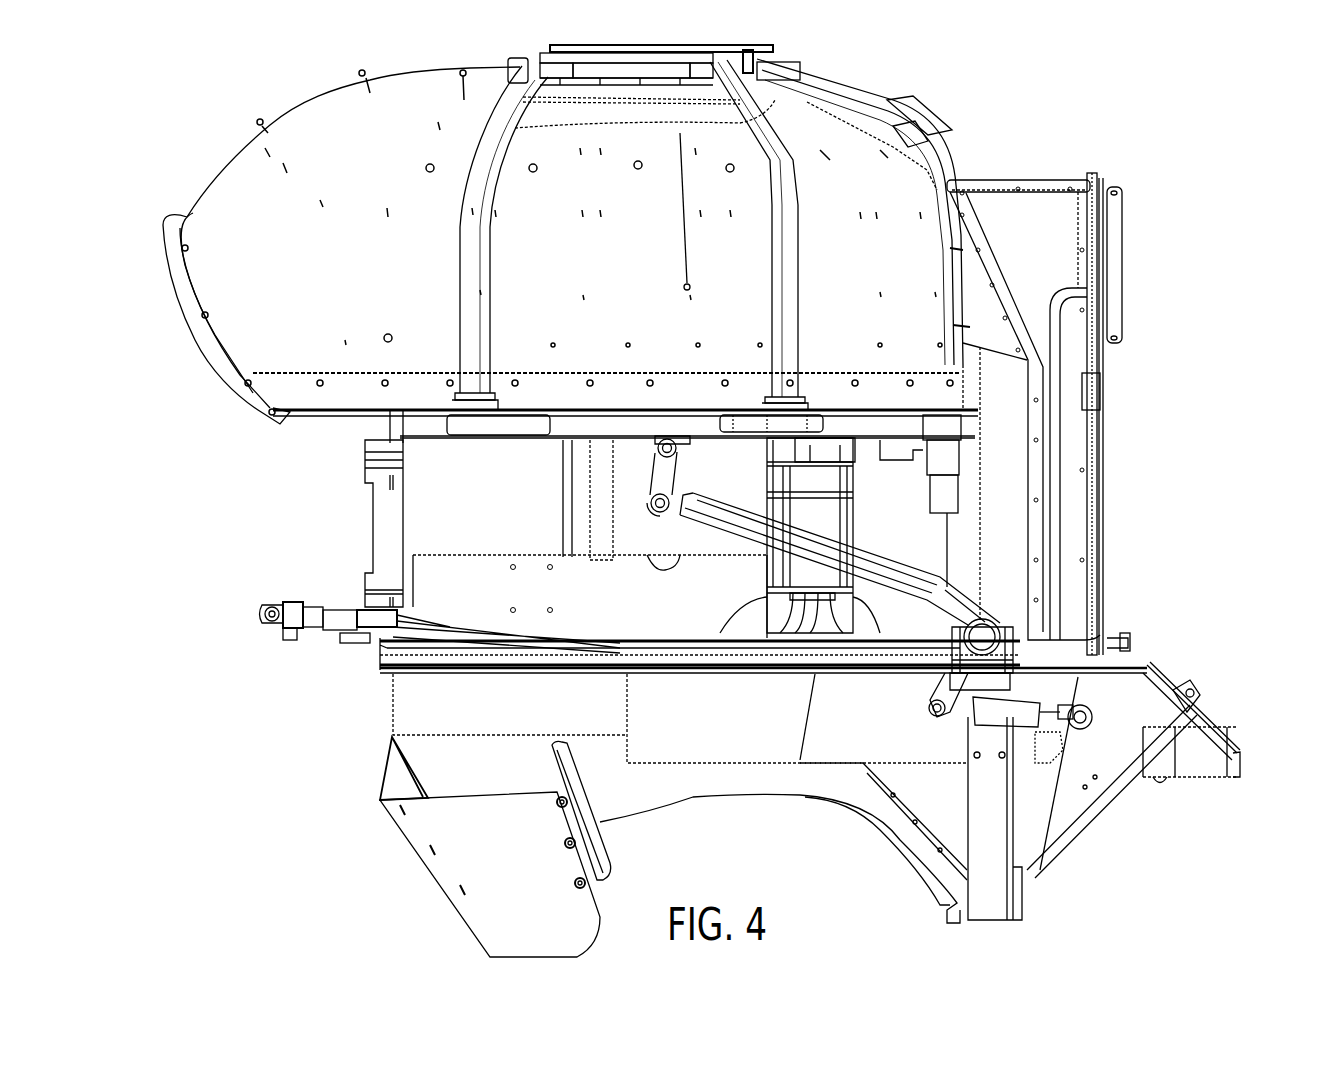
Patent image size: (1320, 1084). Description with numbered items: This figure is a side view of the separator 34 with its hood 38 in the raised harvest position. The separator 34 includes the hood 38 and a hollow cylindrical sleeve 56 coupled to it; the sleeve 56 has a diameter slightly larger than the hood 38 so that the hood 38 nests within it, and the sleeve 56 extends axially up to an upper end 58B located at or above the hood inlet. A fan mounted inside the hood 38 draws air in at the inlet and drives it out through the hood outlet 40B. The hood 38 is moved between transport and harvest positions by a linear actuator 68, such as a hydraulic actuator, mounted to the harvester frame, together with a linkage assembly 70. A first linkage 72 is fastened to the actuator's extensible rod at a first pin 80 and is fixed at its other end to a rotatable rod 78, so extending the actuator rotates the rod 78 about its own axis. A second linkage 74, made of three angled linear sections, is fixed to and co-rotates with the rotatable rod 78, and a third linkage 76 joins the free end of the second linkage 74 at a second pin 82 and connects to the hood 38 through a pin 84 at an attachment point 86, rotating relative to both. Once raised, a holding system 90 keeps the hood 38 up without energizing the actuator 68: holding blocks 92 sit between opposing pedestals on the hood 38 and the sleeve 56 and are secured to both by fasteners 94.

The separator 34 is at (1008, 135).
The hood 38 is at (327, 118).
The hood outlet 40B is at (260, 412).
The cylindrical sleeve 56 is at (427, 602).
The upper end 58B is at (477, 553).
The linear actuator 68 is at (1040, 730).
The linkage assembly 70 is at (978, 534).
The first linkage 72 is at (940, 675).
The second linkage 74 is at (933, 583).
The third linkage 76 is at (662, 482).
The rotatable rod 78 is at (990, 640).
The first pin 80 is at (937, 717).
The second pin 82 is at (658, 507).
The pin 84 is at (677, 455).
The attachment point 86 is at (683, 443).
The holding system 90 is at (359, 480).
The holding blocks 92 is at (380, 495).
The fasteners 94 is at (840, 448).